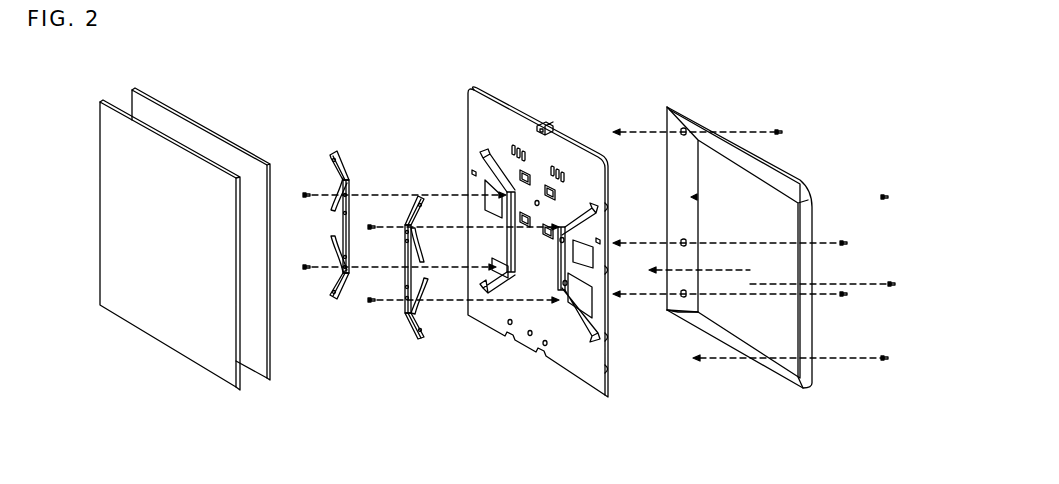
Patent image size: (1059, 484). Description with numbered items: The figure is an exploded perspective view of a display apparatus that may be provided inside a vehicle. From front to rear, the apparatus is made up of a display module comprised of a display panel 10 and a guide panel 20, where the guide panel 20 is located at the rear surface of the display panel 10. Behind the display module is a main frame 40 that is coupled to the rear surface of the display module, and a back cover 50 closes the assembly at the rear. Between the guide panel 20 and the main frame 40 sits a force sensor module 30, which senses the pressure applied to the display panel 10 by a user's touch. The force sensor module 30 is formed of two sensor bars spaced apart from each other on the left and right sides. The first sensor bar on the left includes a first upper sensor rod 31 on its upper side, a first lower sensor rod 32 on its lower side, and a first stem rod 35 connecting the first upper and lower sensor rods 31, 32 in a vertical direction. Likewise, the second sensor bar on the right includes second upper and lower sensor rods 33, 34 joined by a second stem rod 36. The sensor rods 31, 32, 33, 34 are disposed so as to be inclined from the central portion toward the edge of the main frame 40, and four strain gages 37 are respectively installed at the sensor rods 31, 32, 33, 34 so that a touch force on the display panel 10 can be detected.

The display panel 10 is at (120, 219).
The guide panel 20 is at (212, 151).
The force sensor module 30 is at (376, 376).
The first upper sensor rod 31 is at (337, 165).
The first lower sensor rod 32 is at (330, 290).
The second upper sensor rod 33 is at (414, 205).
The second lower sensor rod 34 is at (416, 330).
The first stem rod 35 is at (343, 218).
The second stem rod 36 is at (410, 270).
The strain gages 37 is at (412, 228).
The main frame 40 is at (578, 355).
The back cover 50 is at (771, 378).